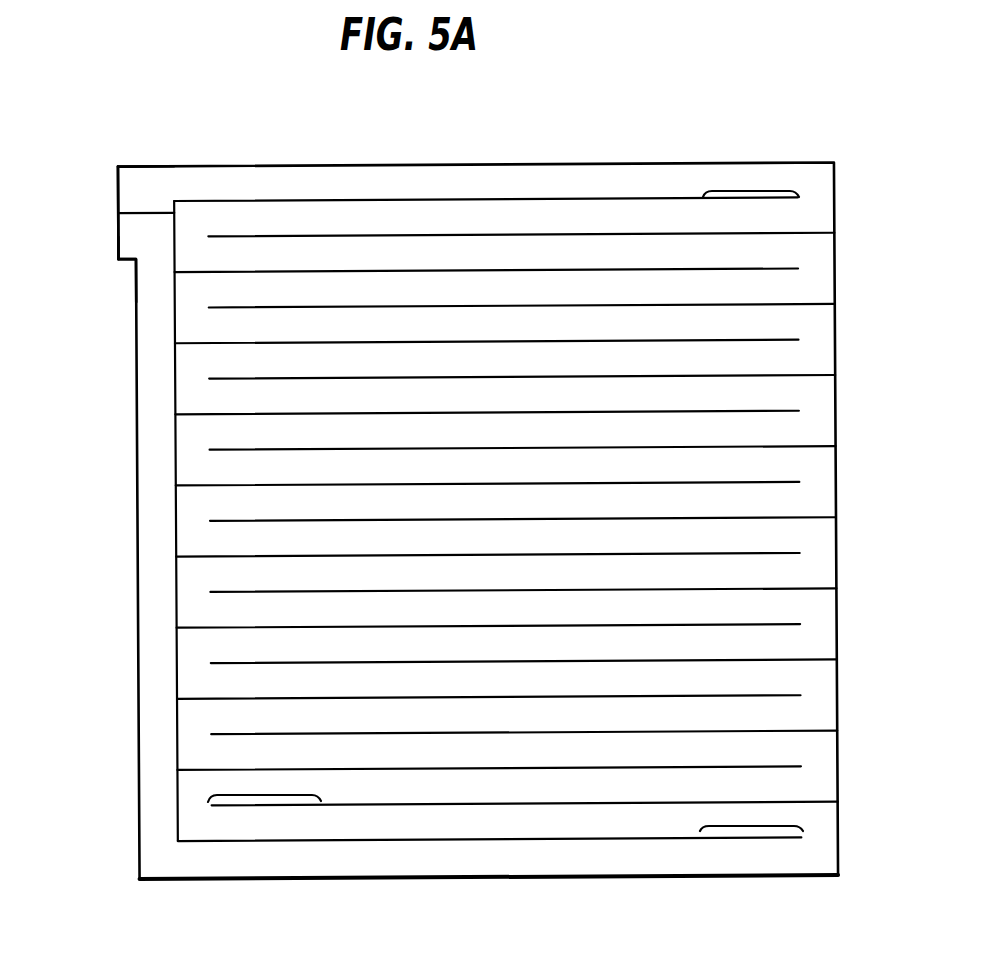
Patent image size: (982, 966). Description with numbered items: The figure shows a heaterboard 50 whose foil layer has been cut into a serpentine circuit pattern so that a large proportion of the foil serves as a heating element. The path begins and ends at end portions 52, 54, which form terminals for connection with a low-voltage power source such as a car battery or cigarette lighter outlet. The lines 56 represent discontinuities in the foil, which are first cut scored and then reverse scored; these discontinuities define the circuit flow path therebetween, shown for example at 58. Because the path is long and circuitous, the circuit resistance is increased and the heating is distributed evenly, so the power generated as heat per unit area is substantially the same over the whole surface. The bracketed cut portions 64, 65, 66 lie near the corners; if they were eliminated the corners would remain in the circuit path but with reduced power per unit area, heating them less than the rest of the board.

The heaterboard 50 is at (861, 186).
The end portion 52 is at (132, 192).
The end portion 54 is at (126, 248).
The lines 56 is at (570, 806).
The circuit flow path 58 is at (350, 823).
The cut portion 64 is at (750, 190).
The cut portion 65 is at (750, 826).
The cut portion 66 is at (265, 794).